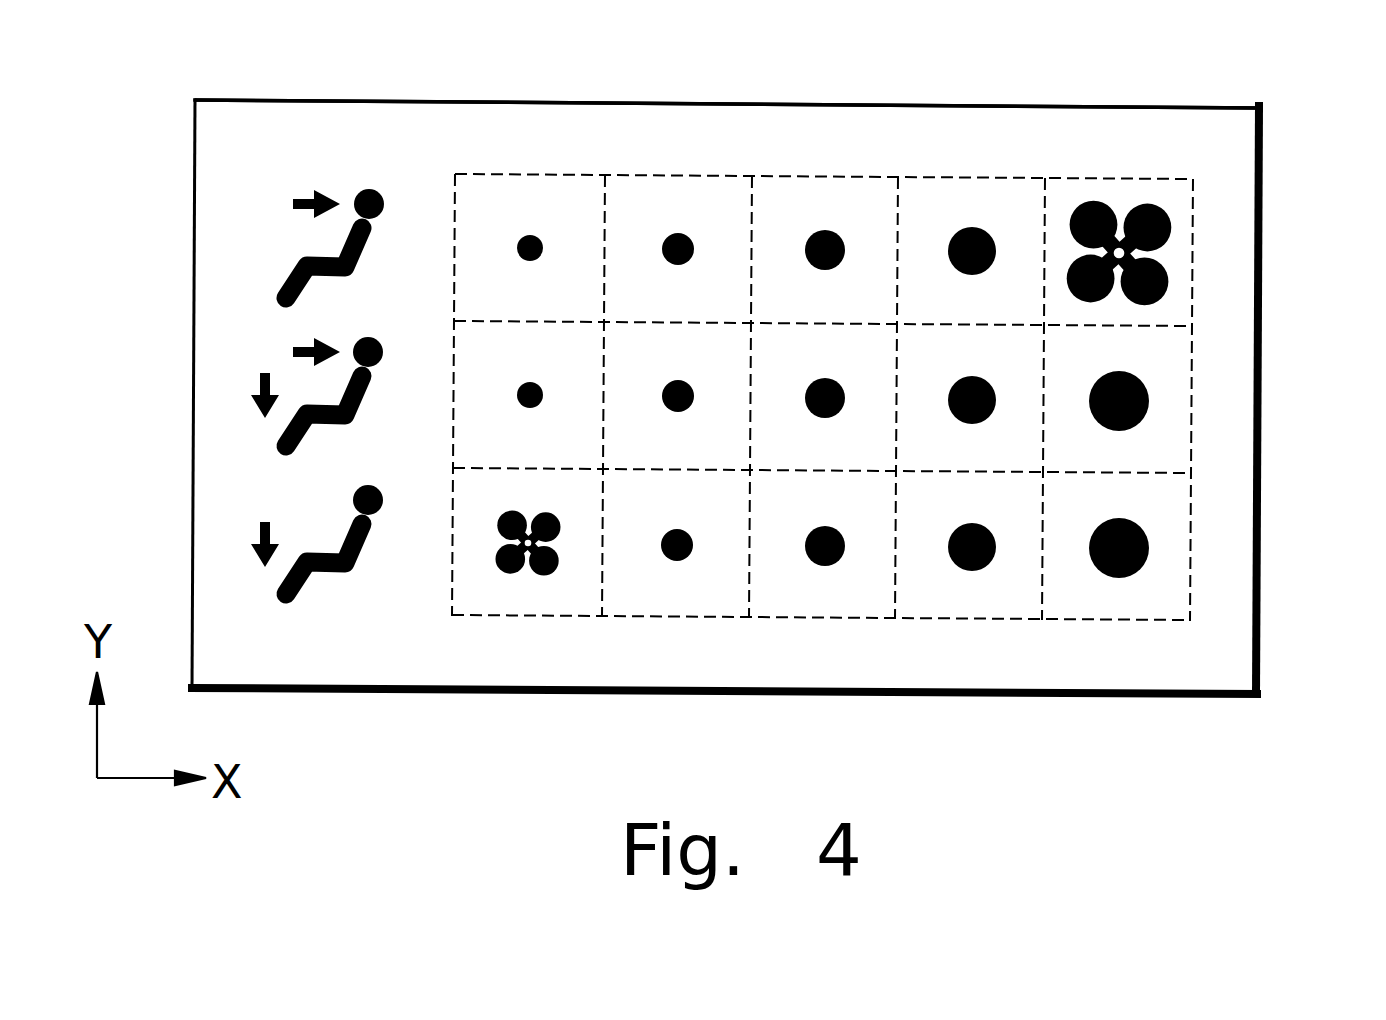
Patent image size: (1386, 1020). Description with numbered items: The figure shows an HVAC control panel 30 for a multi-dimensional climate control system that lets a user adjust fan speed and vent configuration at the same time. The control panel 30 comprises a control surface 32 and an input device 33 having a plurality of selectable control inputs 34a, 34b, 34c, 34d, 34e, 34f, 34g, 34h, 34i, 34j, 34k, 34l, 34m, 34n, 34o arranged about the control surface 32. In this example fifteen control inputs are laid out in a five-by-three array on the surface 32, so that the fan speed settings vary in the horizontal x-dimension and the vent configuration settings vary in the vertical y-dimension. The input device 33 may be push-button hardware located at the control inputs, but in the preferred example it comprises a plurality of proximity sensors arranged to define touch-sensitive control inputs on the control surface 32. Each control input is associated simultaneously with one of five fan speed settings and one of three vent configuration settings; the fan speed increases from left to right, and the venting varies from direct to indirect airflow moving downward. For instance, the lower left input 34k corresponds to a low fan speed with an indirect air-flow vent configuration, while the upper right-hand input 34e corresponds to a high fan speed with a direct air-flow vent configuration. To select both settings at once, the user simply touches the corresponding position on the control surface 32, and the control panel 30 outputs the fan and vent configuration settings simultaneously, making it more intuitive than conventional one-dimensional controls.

The HVAC control panel 30 is at (1274, 100).
The control surface 32 is at (1067, 123).
The input device 33 is at (450, 158).
The control input 34a is at (538, 195).
The control input 34b is at (684, 195).
The control input 34c is at (863, 205).
The control input 34d is at (977, 205).
The control input 34e is at (1123, 205).
The control input 34f is at (480, 390).
The control input 34g is at (643, 437).
The control input 34h is at (778, 345).
The control input 34i is at (1015, 363).
The control input 34j is at (1165, 432).
The control input 34k is at (537, 592).
The control input 34l is at (677, 592).
The control input 34m is at (833, 593).
The control input 34n is at (978, 594).
The control input 34o is at (1119, 595).